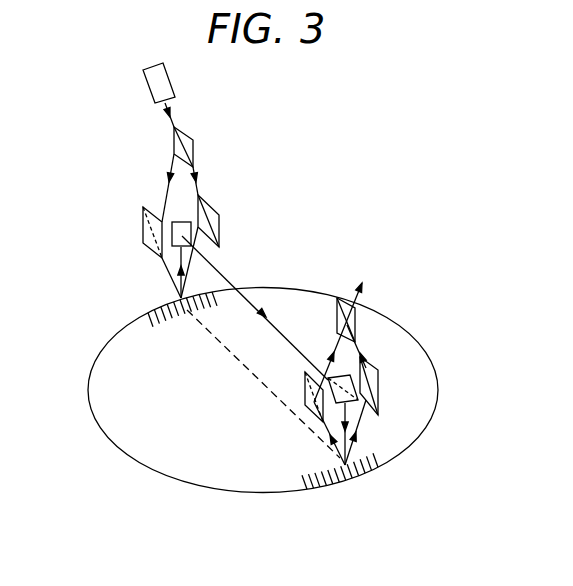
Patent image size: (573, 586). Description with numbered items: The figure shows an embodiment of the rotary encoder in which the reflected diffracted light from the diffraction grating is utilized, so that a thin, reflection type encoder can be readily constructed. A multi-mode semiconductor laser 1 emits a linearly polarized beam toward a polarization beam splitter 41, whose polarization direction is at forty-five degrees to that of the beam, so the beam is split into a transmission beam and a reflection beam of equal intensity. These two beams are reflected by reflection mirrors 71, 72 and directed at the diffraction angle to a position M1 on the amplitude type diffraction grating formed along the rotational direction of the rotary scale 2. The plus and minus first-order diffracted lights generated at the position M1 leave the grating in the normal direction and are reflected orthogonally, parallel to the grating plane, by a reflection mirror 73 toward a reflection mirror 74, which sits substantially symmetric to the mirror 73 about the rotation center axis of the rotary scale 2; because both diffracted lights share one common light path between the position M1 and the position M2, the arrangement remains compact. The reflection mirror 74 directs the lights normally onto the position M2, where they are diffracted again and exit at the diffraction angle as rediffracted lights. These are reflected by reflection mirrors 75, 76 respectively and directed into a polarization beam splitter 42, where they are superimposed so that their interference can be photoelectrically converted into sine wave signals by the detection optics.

The multi-mode semiconductor laser 1 is at (166, 78).
The rotary scale 2 is at (438, 407).
The polarization beam splitter 41 is at (193, 143).
The polarization beam splitter 42 is at (355, 320).
The reflection mirror 71 is at (143, 237).
The reflection mirror 72 is at (219, 218).
The reflection mirror 73 is at (181, 222).
The reflection mirror 74 is at (357, 404).
The reflection mirror 75 is at (304, 400).
The reflection mirror 76 is at (378, 383).
The position on the diffraction grating M1 is at (178, 298).
The position on the diffraction grating M2 is at (371, 470).